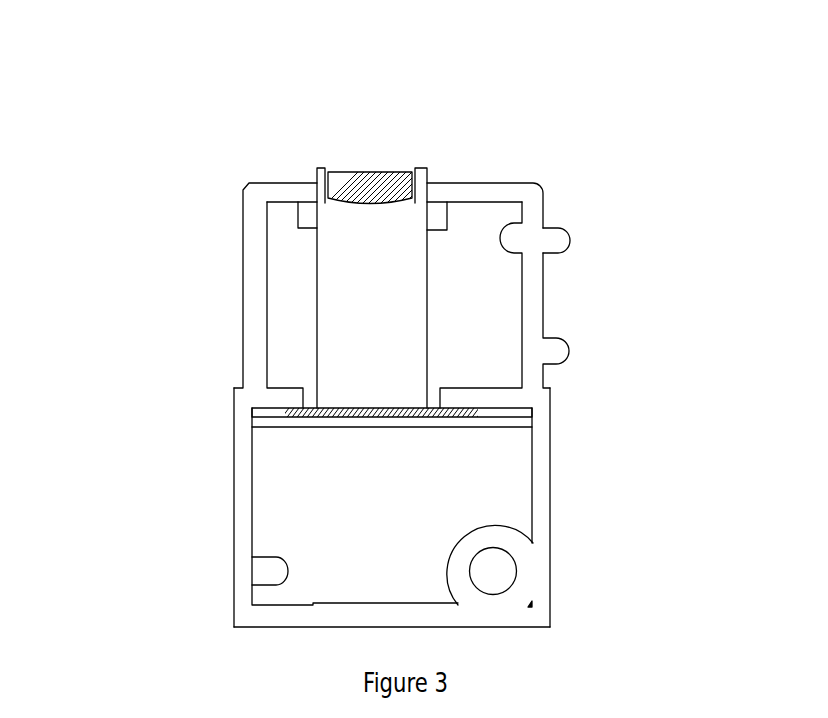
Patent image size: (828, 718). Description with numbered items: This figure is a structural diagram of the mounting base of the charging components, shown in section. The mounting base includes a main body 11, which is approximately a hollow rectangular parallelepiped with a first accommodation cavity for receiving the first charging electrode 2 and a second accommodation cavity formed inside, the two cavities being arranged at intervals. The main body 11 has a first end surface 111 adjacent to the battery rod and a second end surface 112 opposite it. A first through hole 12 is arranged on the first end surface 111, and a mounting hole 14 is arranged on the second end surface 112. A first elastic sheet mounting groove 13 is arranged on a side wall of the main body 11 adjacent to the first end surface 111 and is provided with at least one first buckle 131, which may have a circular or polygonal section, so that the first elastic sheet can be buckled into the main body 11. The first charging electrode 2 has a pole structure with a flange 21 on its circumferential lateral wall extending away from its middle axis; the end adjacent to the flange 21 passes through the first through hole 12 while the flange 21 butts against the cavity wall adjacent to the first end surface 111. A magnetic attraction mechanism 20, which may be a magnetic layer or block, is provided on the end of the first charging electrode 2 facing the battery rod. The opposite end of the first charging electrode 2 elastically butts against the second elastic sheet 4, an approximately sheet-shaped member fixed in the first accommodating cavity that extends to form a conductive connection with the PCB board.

The first charging electrode 2 is at (343, 377).
The second elastic sheet 4 is at (452, 412).
The main body 11 is at (242, 500).
The first through hole 12 is at (313, 183).
The first elastic sheet mounting groove 13 is at (543, 290).
The mounting hole 14 is at (495, 558).
The magnetic attraction mechanism 20 is at (357, 180).
The flange 21 is at (300, 230).
The first end surface 111 is at (493, 183).
The second end surface 112 is at (497, 603).
The first buckle 131 is at (568, 242).